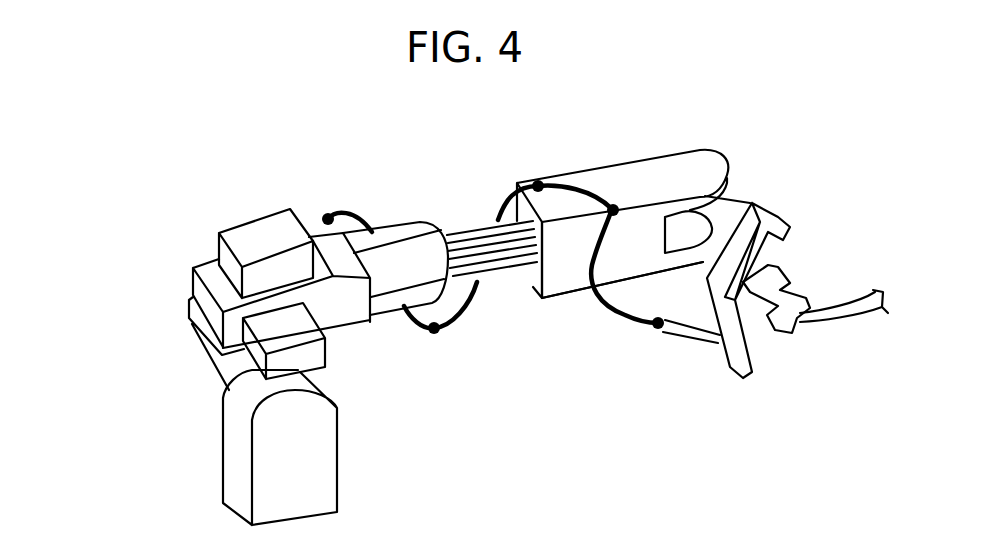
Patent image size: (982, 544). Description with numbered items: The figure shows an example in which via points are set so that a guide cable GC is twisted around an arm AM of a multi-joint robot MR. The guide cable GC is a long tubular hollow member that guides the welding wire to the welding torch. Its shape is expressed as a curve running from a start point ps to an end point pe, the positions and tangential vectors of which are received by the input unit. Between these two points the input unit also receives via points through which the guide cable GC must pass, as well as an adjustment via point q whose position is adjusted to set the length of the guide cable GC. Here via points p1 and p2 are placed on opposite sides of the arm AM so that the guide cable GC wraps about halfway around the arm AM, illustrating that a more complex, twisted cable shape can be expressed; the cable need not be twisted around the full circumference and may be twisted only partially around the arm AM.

The multi-joint robot MR is at (150, 226).
The end point pe is at (328, 213).
The adjustment via point q is at (434, 334).
The guide cable GC is at (577, 180).
The via point p2 is at (535, 180).
The via point p1 is at (616, 205).
The start point ps is at (657, 327).
The arm AM is at (562, 300).